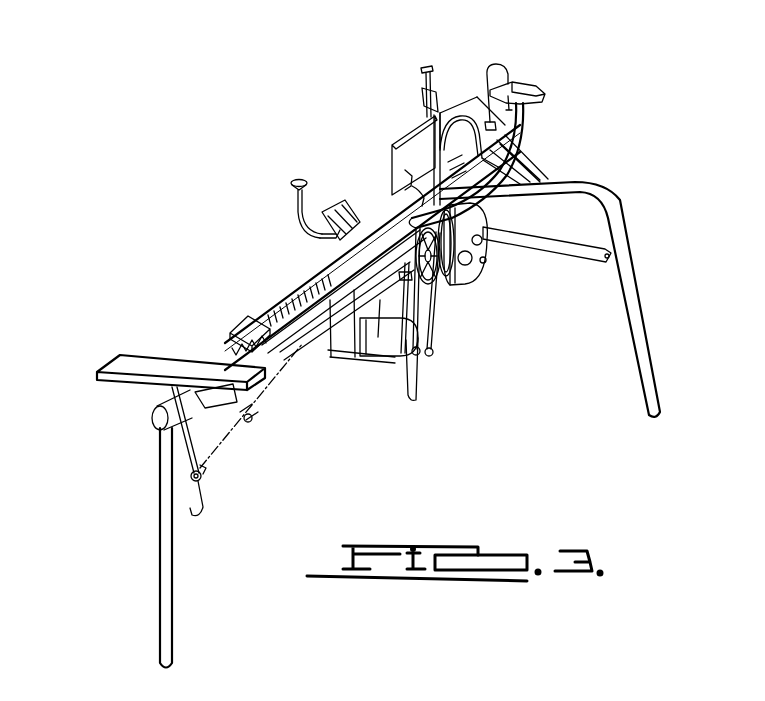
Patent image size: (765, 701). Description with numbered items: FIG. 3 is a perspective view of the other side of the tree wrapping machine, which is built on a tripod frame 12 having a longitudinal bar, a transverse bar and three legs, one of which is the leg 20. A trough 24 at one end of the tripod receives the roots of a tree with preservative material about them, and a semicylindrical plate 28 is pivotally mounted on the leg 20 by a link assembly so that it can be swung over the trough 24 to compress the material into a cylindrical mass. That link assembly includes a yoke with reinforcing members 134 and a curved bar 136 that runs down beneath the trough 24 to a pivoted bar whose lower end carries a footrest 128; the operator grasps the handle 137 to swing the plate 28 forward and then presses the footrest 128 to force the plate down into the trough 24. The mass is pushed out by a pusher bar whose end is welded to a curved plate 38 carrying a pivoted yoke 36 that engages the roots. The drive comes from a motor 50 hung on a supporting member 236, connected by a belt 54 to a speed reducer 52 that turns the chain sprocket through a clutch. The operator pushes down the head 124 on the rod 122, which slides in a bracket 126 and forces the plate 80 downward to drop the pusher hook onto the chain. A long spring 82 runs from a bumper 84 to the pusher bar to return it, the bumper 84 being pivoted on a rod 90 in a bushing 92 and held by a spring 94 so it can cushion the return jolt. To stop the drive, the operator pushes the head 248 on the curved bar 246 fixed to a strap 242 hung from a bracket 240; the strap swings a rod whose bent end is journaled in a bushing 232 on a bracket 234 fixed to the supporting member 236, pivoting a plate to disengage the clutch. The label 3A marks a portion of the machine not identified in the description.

The tripod frame 12 is at (122, 518).
The leg 20 is at (645, 332).
The trough 24 is at (400, 132).
The semicylindrical plate 28 is at (488, 134).
The yoke 36 is at (410, 178).
The curved plate 38 is at (412, 190).
The motor 50 is at (375, 317).
The speed reducer 52 is at (480, 246).
The belt 54 is at (433, 328).
The plate 80 is at (234, 322).
The long spring 82 is at (317, 283).
The rail section 3A is at (288, 296).
The bumper 84 is at (120, 364).
The rod 90 is at (186, 437).
The bushing 92 is at (186, 520).
The spring 94 is at (206, 477).
The rod 122 is at (424, 76).
The head 124 is at (428, 69).
The bracket 126 is at (432, 100).
The footrest 128 is at (427, 311).
The reinforcing members 134 is at (540, 92).
The curved bar 136 is at (512, 127).
The handle 137 is at (490, 96).
The bracket 240 is at (337, 230).
The strap 242 is at (318, 240).
The curved bar 246 is at (292, 226).
The head 248 is at (293, 186).
The bushing 232 is at (333, 370).
The bracket 234 is at (358, 360).
The supporting member 236 is at (392, 382).